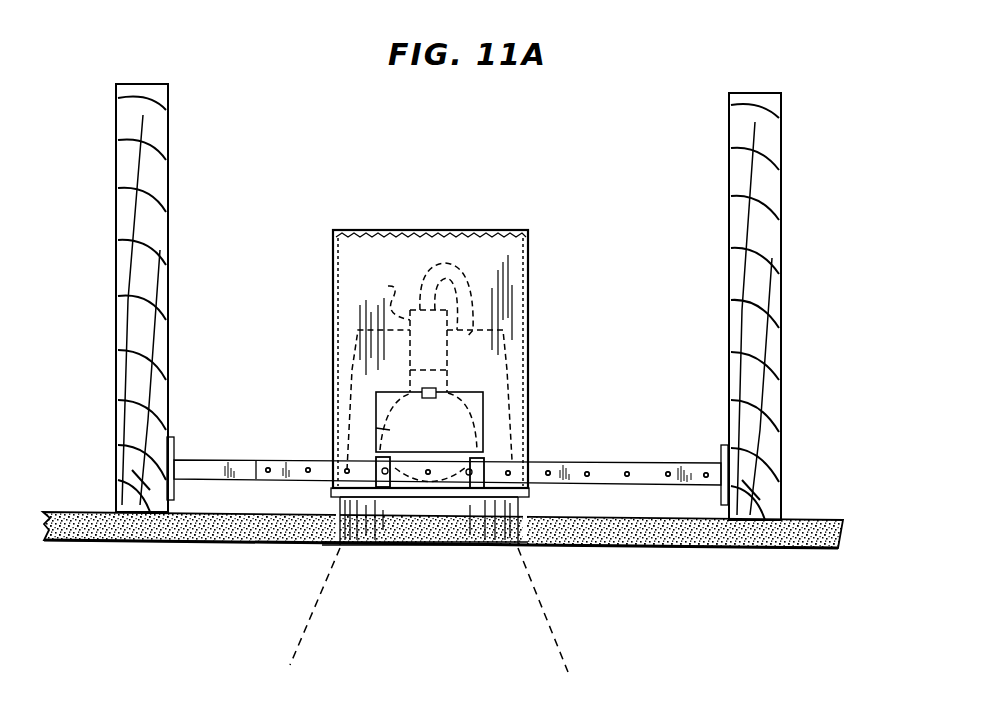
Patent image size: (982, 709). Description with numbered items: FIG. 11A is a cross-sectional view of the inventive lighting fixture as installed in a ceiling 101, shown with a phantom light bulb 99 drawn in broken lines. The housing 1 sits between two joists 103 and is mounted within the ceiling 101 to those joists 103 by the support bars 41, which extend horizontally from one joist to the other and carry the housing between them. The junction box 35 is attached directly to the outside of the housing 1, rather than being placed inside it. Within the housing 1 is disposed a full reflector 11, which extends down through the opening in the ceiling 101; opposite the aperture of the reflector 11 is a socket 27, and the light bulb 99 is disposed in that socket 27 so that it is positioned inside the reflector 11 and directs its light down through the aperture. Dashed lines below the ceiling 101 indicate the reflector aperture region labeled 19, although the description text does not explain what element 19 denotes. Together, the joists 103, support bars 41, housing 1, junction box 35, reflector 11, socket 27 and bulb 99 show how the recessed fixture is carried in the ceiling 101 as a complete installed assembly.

The housing 1 is at (468, 230).
The socket 27 is at (388, 286).
The junction box 35 is at (376, 428).
The light bulb 99 is at (530, 432).
The support bars 41 is at (660, 462).
The joists 103 is at (781, 318).
The full reflector 11 is at (372, 522).
The conduit 19 is at (537, 558).
The ceiling 101 is at (672, 547).